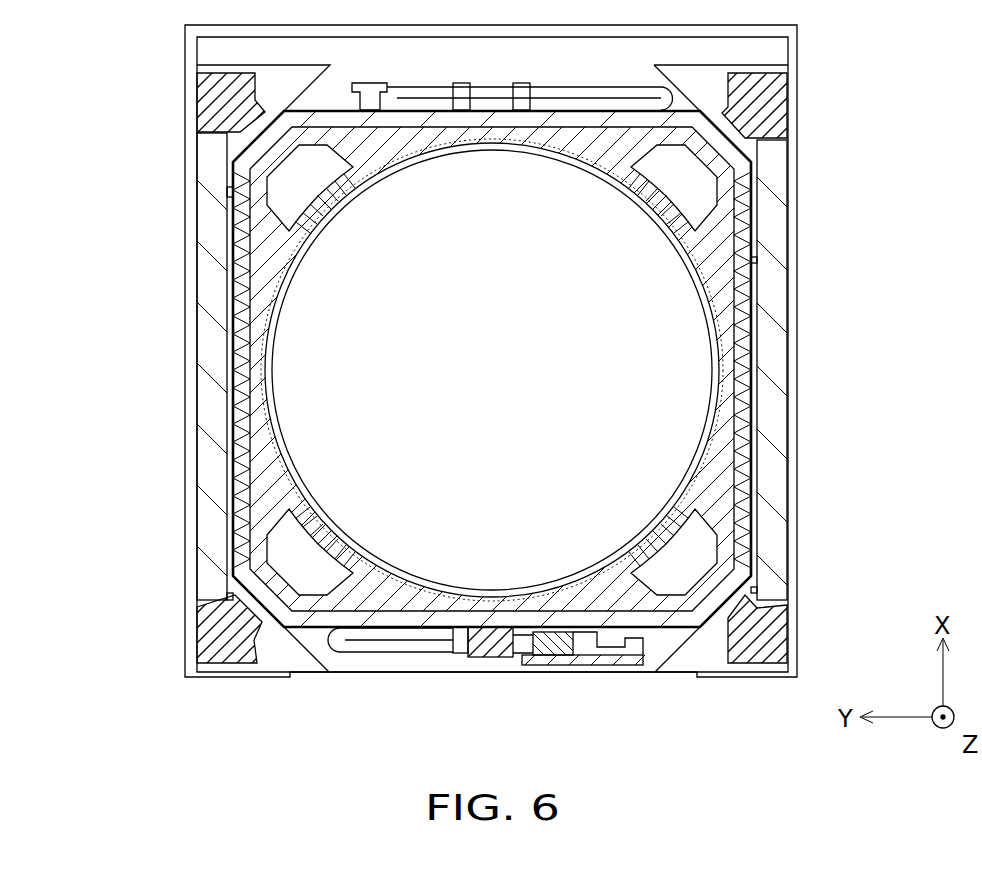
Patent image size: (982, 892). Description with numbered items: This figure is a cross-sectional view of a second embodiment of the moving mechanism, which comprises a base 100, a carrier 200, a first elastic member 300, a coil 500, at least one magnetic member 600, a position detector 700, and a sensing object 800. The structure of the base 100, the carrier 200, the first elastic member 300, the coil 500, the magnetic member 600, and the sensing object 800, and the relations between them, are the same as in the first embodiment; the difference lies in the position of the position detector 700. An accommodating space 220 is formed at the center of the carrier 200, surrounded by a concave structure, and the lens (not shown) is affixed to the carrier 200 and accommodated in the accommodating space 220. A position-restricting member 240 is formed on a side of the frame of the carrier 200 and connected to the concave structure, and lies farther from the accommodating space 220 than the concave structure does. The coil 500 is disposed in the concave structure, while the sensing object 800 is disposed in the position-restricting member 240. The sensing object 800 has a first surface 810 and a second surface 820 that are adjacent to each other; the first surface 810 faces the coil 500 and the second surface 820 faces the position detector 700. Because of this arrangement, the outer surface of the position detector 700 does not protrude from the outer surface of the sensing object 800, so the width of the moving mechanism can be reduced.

The base 100 is at (227, 650).
The carrier 200 is at (265, 247).
The accommodating space 220 is at (635, 368).
The position-restricting member 240 is at (456, 654).
The first elastic member 300 is at (703, 653).
The coil 500 is at (243, 370).
The magnetic member 600 is at (770, 472).
The position detector 700 is at (558, 647).
The sensing object 800 is at (491, 406).
The first surface 810 is at (493, 627).
The second surface 820 is at (523, 627).